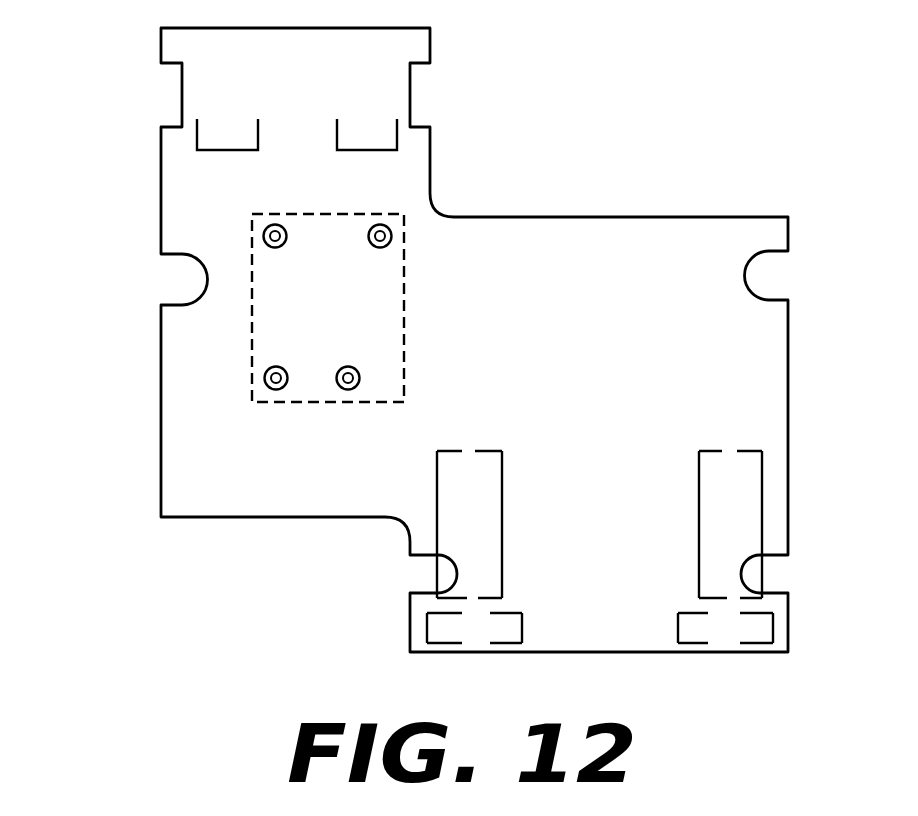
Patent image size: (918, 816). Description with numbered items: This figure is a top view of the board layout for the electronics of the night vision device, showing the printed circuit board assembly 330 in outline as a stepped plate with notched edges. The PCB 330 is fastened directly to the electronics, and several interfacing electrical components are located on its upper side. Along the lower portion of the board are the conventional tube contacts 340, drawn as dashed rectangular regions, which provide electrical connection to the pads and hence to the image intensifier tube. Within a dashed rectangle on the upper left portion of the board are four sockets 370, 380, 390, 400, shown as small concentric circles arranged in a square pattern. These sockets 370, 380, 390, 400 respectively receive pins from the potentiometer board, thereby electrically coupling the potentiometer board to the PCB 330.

The printed circuit board assembly 330 is at (177, 430).
The tube contacts 340 is at (458, 524).
The socket 370 is at (391, 239).
The socket 380 is at (284, 244).
The socket 390 is at (277, 367).
The socket 400 is at (360, 377).